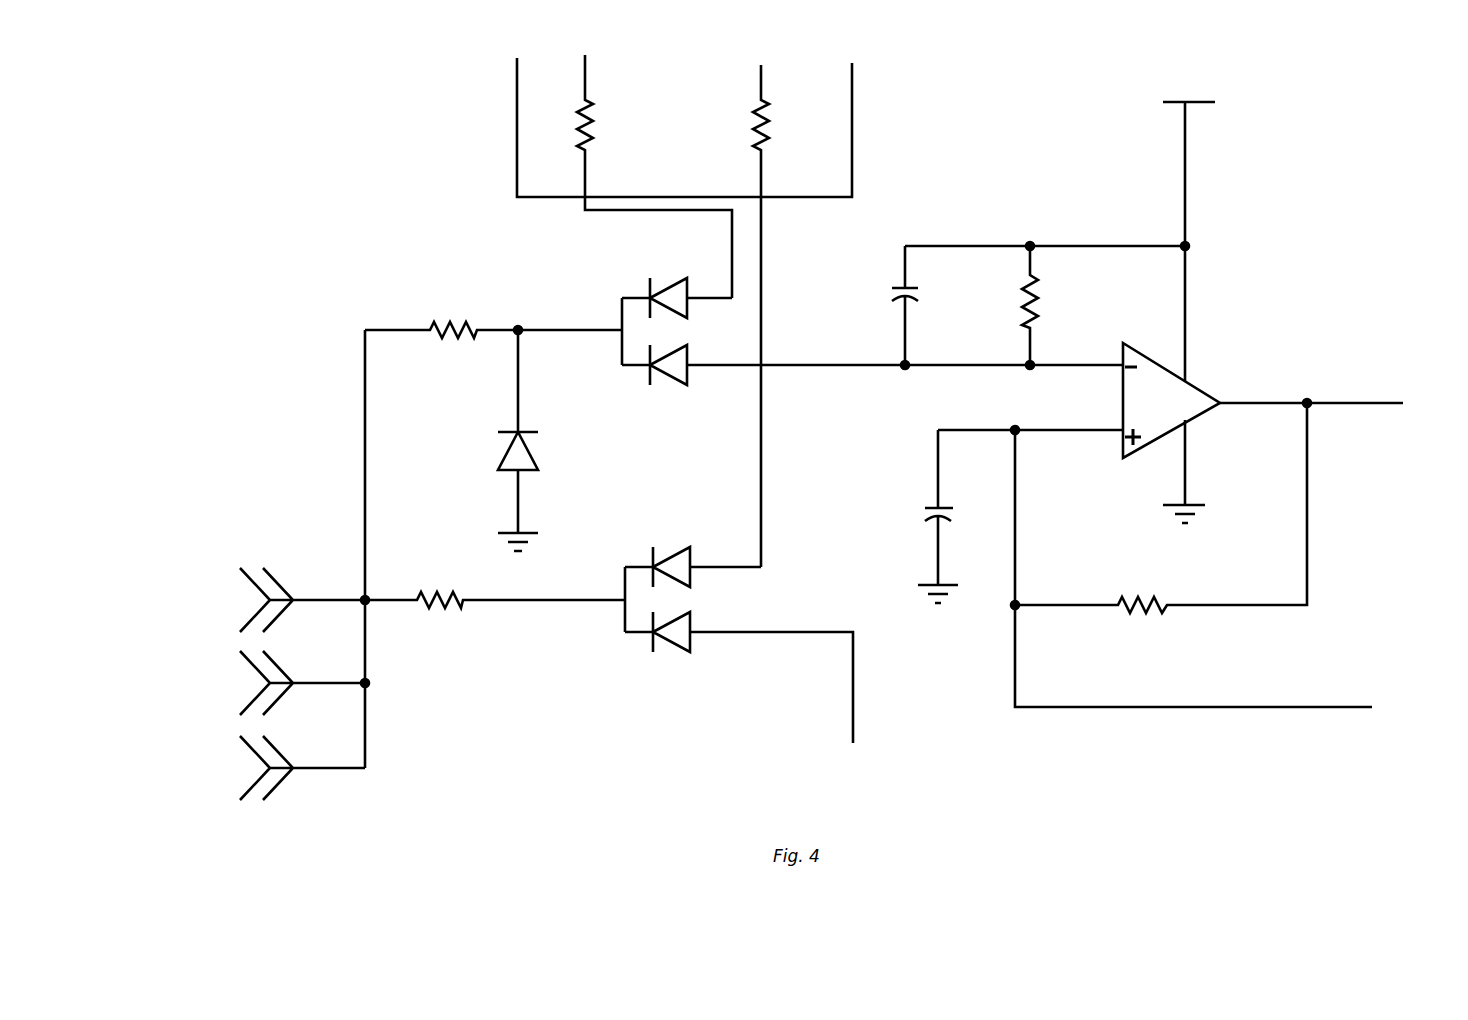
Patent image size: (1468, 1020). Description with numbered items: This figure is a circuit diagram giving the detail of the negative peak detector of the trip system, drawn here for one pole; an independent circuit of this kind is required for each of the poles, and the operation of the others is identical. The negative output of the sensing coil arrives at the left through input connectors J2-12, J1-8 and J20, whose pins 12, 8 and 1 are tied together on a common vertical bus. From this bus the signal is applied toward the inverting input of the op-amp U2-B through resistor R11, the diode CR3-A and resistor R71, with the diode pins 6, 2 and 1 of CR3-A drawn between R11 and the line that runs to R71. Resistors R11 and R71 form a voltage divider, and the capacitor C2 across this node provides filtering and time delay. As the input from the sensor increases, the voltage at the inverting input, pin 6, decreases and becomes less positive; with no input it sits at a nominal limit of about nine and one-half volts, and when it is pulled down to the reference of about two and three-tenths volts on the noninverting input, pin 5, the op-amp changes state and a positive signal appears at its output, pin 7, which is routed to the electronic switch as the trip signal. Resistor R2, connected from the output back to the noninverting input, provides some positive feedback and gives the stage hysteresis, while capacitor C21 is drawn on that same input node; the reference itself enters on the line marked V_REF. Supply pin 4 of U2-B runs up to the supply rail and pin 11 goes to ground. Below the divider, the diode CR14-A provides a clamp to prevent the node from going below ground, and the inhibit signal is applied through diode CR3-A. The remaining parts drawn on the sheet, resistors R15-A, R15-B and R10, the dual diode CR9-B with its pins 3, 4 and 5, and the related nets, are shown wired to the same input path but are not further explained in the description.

The resistor R15-A 47K R15-A is at (684, 176).
The resistor R15-B 47K R15-B is at (792, 316).
The resistor R11 is at (493, 331).
The resistor R10 200K R10 is at (495, 604).
The resistor R71 is at (1014, 305).
The resistor R2 is at (1220, 573).
The diode CR3-A is at (754, 334).
The dual diode CR9-B BAW56S CR9-B is at (730, 630).
The diode CR14-A is at (555, 440).
The capacitor C2 is at (1038, 307).
The capacitor C21 1000pF C21 is at (983, 514).
The op-amp U2-B is at (1260, 325).
The connector J2-12 aircore_n J2-12 is at (261, 600).
The connector J1-8 aircore_n J1-8 is at (261, 683).
The connector J20 aircore_n J20 is at (262, 768).
The pin 1 is at (702, 378).
The pin 2 is at (699, 287).
The pin 3 is at (612, 572).
The pin 4 is at (705, 554).
The pin 5 is at (705, 649).
The pin 6 is at (608, 316).
The pin 7 is at (1248, 559).
The pin 8 is at (310, 669).
The pin 11 is at (1201, 471).
The pin 12 is at (313, 586).